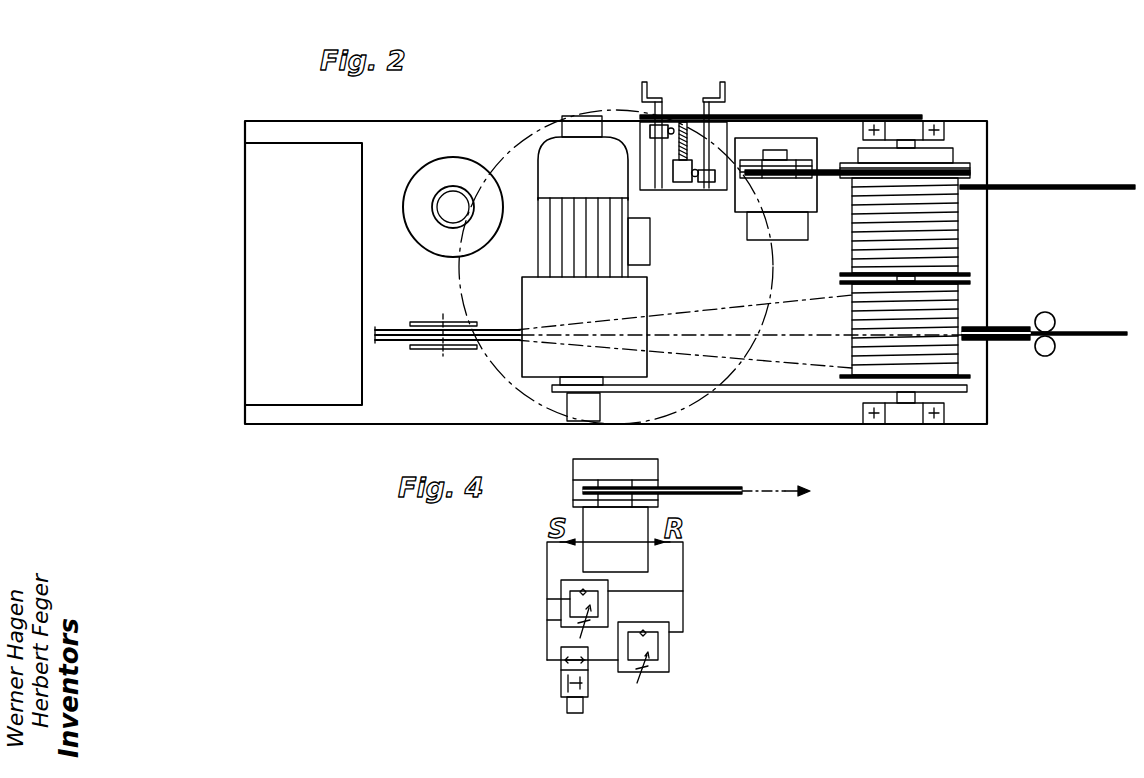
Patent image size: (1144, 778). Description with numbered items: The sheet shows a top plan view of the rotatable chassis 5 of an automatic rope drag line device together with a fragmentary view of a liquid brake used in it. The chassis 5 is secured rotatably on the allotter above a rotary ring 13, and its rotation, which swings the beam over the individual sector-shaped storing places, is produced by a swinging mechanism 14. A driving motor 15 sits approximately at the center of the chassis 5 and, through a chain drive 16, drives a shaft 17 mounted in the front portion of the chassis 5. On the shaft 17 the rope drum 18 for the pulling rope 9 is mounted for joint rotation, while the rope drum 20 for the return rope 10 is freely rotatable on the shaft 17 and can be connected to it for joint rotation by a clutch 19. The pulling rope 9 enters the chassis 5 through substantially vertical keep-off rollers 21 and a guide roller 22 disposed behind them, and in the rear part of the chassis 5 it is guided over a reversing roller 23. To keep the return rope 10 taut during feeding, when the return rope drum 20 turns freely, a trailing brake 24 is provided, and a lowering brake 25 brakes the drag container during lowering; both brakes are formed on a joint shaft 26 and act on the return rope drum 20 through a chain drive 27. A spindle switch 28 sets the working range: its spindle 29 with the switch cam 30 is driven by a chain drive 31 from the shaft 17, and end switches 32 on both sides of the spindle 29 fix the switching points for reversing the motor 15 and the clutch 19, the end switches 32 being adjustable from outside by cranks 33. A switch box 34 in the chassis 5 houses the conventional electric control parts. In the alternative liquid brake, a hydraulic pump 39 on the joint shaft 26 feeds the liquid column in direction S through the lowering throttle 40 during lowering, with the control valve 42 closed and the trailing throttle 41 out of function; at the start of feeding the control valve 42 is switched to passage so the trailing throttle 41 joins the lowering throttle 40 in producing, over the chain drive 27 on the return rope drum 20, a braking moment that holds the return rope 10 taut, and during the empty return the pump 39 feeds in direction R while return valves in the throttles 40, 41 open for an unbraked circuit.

In FIG. 2, the chassis 5 is at (308, 428).
In FIG. 2, the pulling rope 9 is at (1119, 343).
In FIG. 2, the return rope 10 is at (1105, 185).
In FIG. 2, the rotary ring 13 is at (490, 366).
In FIG. 2, the swinging mechanism 14 is at (425, 190).
In FIG. 2, the driving motor 15 is at (553, 163).
In FIG. 2, the chain drive 16 is at (790, 393).
In FIG. 2, the shaft 17 is at (905, 395).
In FIG. 2, the rope drum 18 is at (952, 305).
In FIG. 2, the clutch 19 is at (930, 160).
In FIG. 2, the return rope drum 20 is at (960, 220).
In FIG. 4, the return rope drum 20 is at (798, 491).
In FIG. 2, the keep-off rollers 21 is at (1055, 316).
In FIG. 2, the guide roller 22 is at (1012, 342).
In FIG. 2, the reversing roller 23 is at (393, 322).
In FIG. 2, the trailing brake 24 is at (772, 150).
In FIG. 2, the lowering brake 25 is at (800, 205).
In FIG. 2, the joint shaft 26 is at (792, 160).
In FIG. 4, the joint shaft 26 is at (620, 486).
In FIG. 2, the chain drive 27 is at (830, 170).
In FIG. 4, the chain drive 27 is at (700, 490).
In FIG. 2, the spindle switch 28 is at (723, 190).
In FIG. 2, the spindle 29 is at (685, 140).
In FIG. 2, the switch cam 30 is at (682, 183).
In FIG. 2, the chain drive 31 is at (833, 115).
In FIG. 2, the end switches 32 is at (660, 131).
In FIG. 2, the cranks 33 is at (645, 97).
In FIG. 2, the switch box 34 is at (272, 277).
In FIG. 4, the hydraulic pump 39 is at (638, 514).
In FIG. 4, the lowering throttle 40 is at (567, 601).
In FIG. 4, the trailing throttle 41 is at (666, 650).
In FIG. 4, the control valve 42 is at (560, 688).